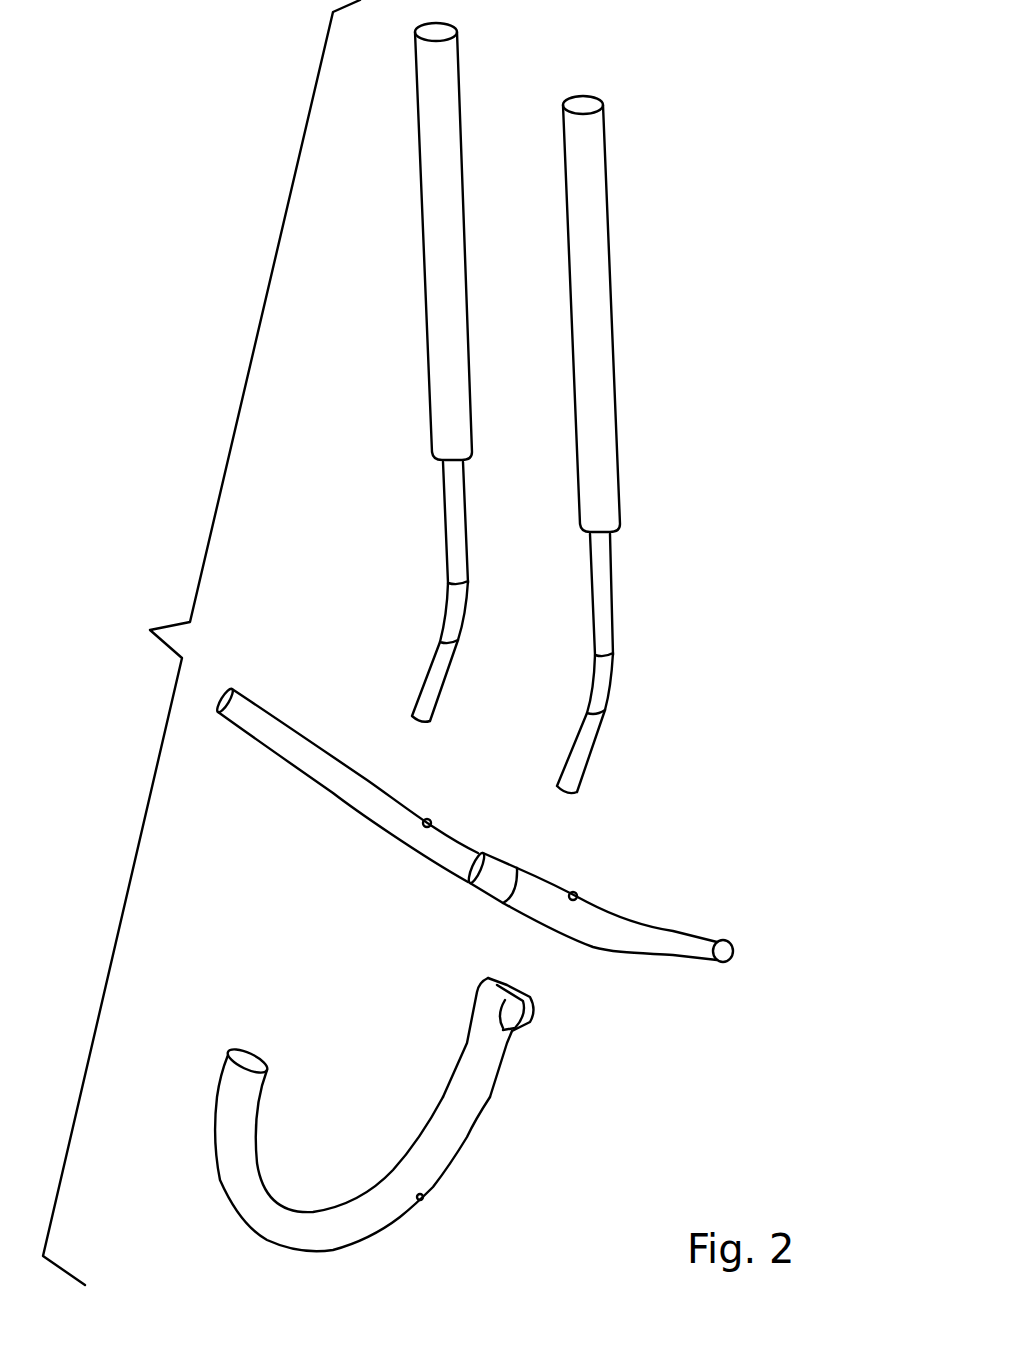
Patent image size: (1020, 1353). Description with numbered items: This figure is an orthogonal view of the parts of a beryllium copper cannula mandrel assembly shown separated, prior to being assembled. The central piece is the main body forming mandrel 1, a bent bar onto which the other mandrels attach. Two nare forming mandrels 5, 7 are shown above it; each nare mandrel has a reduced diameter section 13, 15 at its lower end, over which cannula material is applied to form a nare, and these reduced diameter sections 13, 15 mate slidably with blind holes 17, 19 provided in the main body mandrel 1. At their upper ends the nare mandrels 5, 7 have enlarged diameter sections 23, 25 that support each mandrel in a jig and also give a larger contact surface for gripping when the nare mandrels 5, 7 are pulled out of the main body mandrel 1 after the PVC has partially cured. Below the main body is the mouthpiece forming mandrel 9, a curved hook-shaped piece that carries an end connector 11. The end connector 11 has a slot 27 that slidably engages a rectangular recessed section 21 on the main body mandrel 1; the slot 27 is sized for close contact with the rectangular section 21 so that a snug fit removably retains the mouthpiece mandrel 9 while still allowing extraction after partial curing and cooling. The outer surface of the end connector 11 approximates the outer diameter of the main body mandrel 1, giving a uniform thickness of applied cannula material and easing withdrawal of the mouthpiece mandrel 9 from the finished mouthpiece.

The main body forming mandrel 1 is at (623, 925).
The nare forming mandrel 5 is at (593, 320).
The nare forming mandrel 7 is at (445, 275).
The mouthpiece forming mandrel 9 is at (423, 1195).
The end connector 11 is at (488, 992).
The reduced diameter section 13 is at (583, 778).
The reduced diameter section 15 is at (440, 695).
The blind hole 17 is at (580, 891).
The blind hole 19 is at (433, 821).
The rectangular recessed section 21 is at (497, 883).
The enlarged diameter section 23 is at (605, 180).
The enlarged diameter section 25 is at (460, 97).
The slot 27 is at (520, 1008).